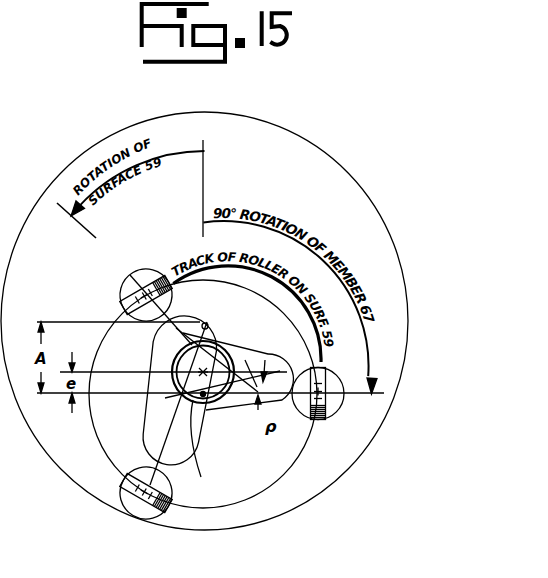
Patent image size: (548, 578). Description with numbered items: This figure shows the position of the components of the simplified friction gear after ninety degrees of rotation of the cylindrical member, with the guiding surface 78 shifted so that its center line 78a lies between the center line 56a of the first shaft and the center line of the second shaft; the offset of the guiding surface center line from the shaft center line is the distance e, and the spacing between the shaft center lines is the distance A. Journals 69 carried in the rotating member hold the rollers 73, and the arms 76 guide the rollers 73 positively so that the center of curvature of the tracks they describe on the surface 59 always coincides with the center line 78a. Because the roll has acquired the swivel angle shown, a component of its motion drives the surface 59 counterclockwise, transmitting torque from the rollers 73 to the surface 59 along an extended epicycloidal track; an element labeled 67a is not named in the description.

The surface 59 is at (268, 175).
The journal 69 is at (142, 272).
The roller 73 is at (133, 299).
The arm 76 is at (153, 349).
The guiding surface 78 is at (199, 468).
The center line of the guiding surface 78a is at (233, 345).
The center line of the shaft 56a is at (208, 326).
The member track 67a is at (212, 438).